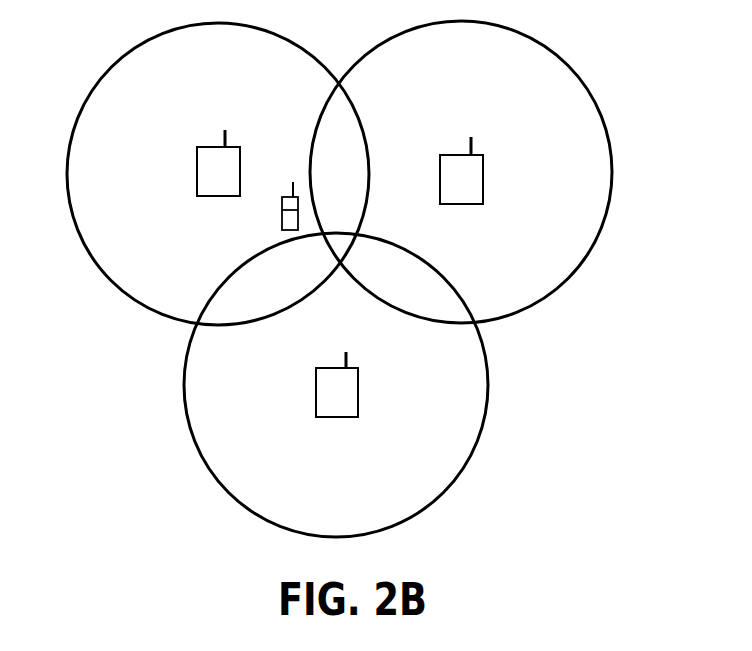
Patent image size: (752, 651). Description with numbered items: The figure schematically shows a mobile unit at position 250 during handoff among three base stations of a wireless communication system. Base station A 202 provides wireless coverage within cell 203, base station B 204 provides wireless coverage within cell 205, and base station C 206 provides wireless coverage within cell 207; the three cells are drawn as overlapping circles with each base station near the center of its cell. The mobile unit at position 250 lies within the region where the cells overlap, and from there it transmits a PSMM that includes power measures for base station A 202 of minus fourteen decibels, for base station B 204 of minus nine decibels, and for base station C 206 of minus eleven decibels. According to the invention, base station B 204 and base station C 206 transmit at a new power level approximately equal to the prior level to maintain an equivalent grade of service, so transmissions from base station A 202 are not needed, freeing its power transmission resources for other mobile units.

The base station A 202 is at (316, 383).
The cell 203 is at (487, 402).
The base station B 204 is at (197, 173).
The cell 205 is at (98, 82).
The base station C 206 is at (440, 170).
The cell 207 is at (613, 165).
The position 250 is at (282, 212).